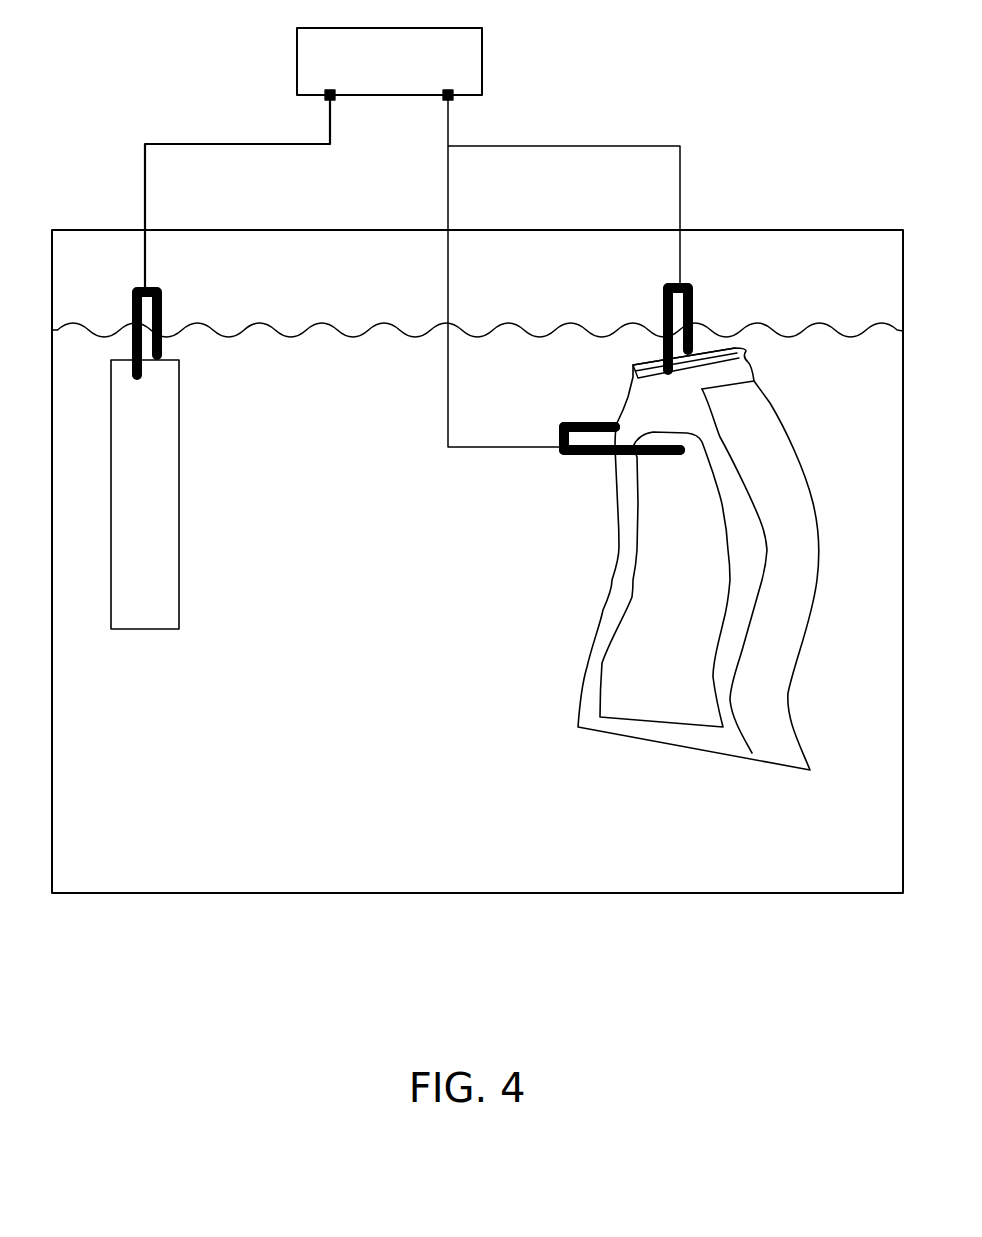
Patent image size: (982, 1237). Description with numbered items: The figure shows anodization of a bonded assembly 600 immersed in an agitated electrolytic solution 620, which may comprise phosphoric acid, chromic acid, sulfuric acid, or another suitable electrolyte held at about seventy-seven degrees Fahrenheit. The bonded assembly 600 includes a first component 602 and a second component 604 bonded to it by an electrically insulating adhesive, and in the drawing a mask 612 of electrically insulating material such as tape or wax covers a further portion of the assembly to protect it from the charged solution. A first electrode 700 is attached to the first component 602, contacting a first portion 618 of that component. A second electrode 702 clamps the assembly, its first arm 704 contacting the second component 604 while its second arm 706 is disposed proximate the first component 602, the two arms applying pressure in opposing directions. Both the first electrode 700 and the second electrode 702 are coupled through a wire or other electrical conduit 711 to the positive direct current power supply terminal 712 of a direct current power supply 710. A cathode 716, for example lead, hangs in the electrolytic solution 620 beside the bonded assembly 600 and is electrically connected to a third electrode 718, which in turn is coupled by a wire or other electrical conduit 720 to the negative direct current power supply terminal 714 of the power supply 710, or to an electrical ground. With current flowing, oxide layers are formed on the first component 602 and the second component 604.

The bonded assembly 600 is at (705, 778).
The first component 602 is at (656, 412).
The second component 604 is at (661, 560).
The mask 612 is at (763, 627).
The first portion 618 is at (633, 362).
The electrolytic solution 620 is at (366, 524).
The first electrode 700 is at (725, 278).
The second electrode 702 is at (535, 420).
The first arm 704 is at (598, 457).
The second arm 706 is at (585, 422).
The direct current power supply 710 is at (371, 74).
The electrical conduit 711 is at (550, 146).
The positive direct current power supply terminal 712 is at (455, 92).
The negative direct current power supply terminal 714 is at (325, 93).
The cathode 716 is at (122, 502).
The third electrode 718 is at (185, 295).
The electrical conduit 720 is at (145, 150).